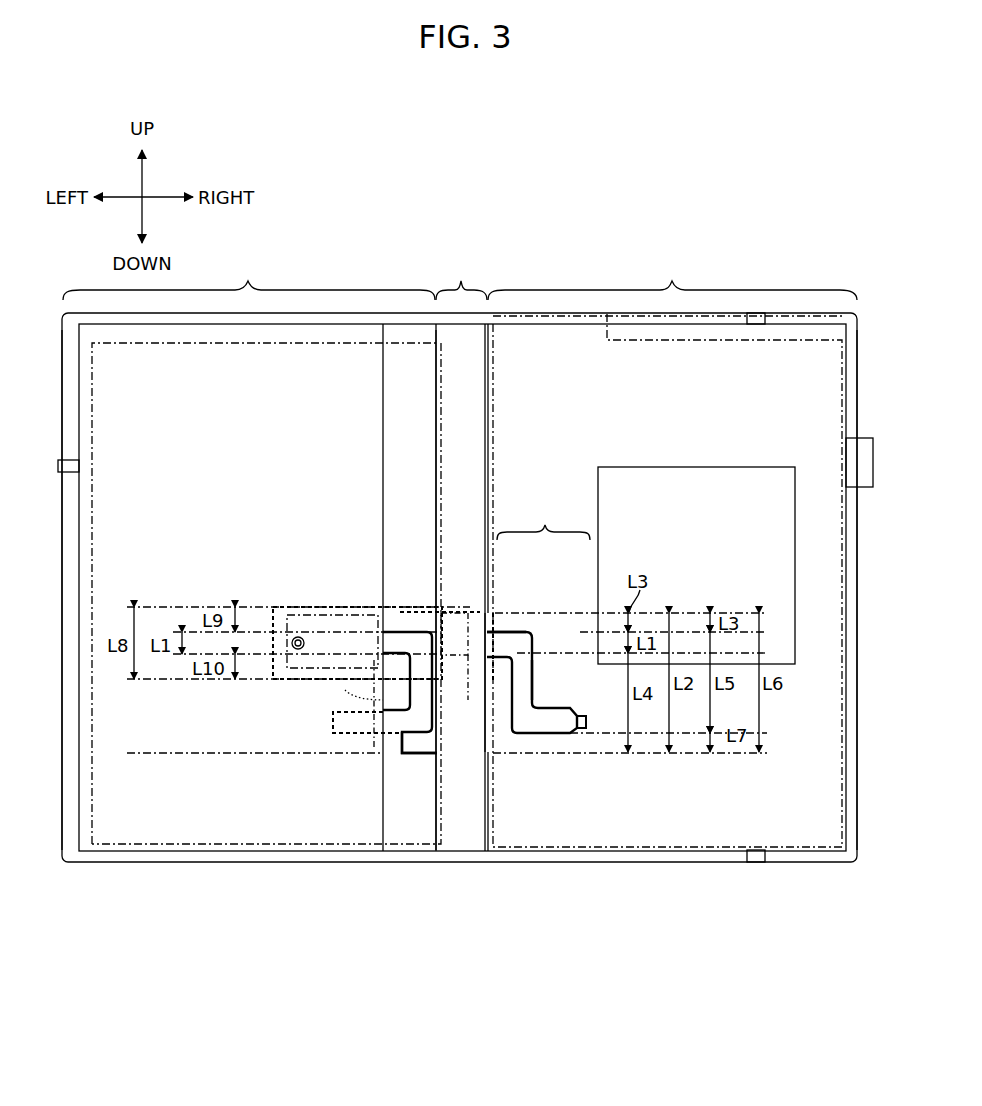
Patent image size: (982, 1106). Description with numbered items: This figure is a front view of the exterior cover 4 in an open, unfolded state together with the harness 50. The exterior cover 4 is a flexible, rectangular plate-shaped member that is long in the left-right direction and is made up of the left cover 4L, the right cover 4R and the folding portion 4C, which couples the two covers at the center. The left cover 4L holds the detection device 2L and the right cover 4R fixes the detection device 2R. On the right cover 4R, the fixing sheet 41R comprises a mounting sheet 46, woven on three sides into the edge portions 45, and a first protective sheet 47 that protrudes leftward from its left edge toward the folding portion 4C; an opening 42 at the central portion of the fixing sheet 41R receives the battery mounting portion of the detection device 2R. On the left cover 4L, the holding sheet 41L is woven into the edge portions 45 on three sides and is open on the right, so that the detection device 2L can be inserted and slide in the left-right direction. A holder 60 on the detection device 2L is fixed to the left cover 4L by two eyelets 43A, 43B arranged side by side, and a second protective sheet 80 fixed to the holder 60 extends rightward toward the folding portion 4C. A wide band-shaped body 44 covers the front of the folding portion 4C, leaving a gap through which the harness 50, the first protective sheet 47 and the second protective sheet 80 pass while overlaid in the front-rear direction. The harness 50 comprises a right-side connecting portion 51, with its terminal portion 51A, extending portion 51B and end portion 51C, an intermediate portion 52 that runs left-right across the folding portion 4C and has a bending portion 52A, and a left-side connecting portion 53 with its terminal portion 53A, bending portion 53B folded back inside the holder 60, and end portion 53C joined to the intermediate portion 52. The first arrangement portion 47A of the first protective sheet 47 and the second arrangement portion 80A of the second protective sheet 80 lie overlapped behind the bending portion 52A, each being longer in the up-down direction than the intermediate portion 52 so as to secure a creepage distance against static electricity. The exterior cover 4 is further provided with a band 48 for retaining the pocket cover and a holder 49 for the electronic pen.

The exterior cover 4 is at (706, 190).
The detection device 2L is at (80, 562).
The detection device 2R is at (848, 562).
The left cover 4L is at (249, 278).
The folding portion 4C is at (461, 278).
The right cover 4R is at (672, 276).
The holding sheet 41L is at (158, 805).
The fixing sheet 41R is at (488, 918).
The opening 42 is at (795, 527).
The eyelet 43A is at (292, 614).
The eyelet 43B is at (374, 660).
The band-shaped body 44 is at (470, 392).
The edge portions 45 is at (688, 856).
The mounting sheet 46 is at (631, 800).
The first protective sheet 47 is at (421, 746).
The first arrangement portion 47A is at (493, 732).
The band 48 is at (756, 863).
The holder 49 is at (862, 456).
The harness 50 is at (543, 523).
The right-side connecting portion 51 is at (595, 726).
The terminal portion 51A is at (581, 730).
The extending portion 51B is at (525, 680).
The end portion 51C is at (520, 645).
The intermediate portion 52 is at (462, 613).
The bending portion 52A is at (459, 655).
The left-side connecting portion 53 is at (345, 617).
The terminal portion 53A is at (333, 720).
The bending portion 53B is at (350, 700).
The end portion 53C is at (397, 752).
The holder 60 is at (312, 618).
The second protective sheet 80 is at (283, 680).
The second arrangement portion 80A is at (495, 683).